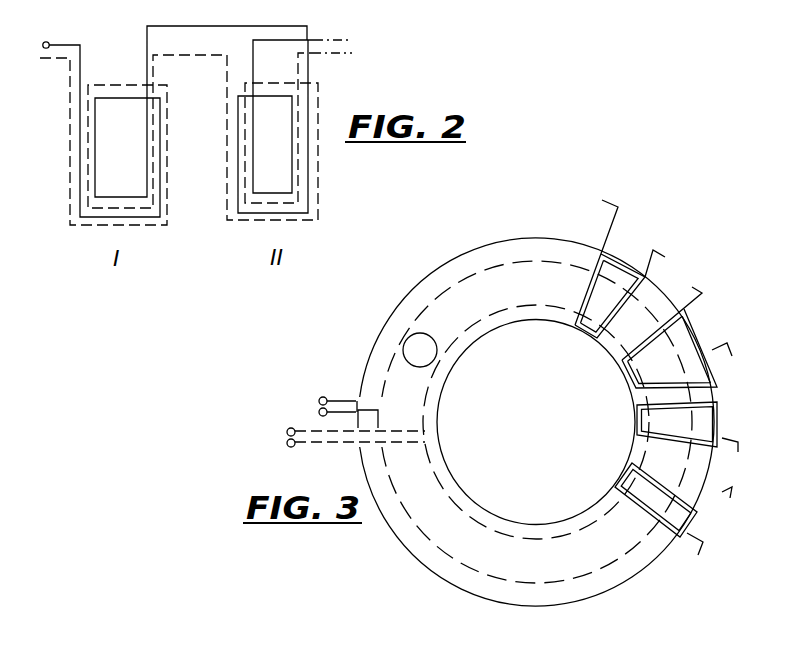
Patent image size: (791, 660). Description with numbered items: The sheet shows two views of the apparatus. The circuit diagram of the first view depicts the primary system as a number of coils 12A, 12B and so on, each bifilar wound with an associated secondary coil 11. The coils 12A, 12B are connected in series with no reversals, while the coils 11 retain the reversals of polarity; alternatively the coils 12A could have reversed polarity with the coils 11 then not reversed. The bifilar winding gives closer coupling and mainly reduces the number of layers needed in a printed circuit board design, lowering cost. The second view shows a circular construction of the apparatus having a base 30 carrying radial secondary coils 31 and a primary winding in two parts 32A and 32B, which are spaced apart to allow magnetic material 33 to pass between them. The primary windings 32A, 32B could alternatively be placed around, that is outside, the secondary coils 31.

In FIG. 2, the coil 11 is at (148, 218).
In FIG. 2, the coil 12A is at (90, 226).
In FIG. 2, the coil 12B is at (265, 222).
In FIG. 3, the base 30 is at (418, 559).
In FIG. 3, the radial secondary coils 31 is at (668, 313).
In FIG. 3, the primary winding part 32A is at (506, 311).
In FIG. 3, the primary winding part 32B is at (503, 266).
In FIG. 3, the magnetic material 33 is at (403, 347).